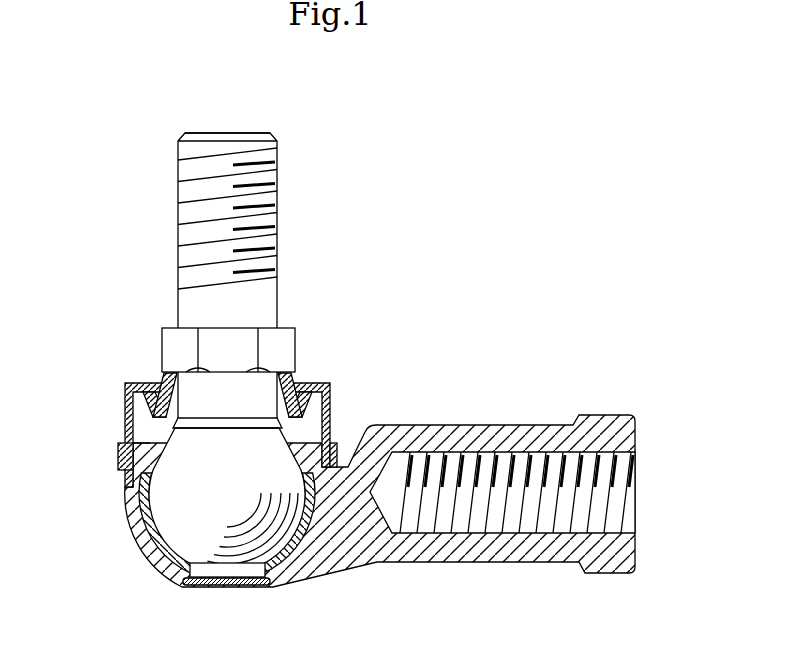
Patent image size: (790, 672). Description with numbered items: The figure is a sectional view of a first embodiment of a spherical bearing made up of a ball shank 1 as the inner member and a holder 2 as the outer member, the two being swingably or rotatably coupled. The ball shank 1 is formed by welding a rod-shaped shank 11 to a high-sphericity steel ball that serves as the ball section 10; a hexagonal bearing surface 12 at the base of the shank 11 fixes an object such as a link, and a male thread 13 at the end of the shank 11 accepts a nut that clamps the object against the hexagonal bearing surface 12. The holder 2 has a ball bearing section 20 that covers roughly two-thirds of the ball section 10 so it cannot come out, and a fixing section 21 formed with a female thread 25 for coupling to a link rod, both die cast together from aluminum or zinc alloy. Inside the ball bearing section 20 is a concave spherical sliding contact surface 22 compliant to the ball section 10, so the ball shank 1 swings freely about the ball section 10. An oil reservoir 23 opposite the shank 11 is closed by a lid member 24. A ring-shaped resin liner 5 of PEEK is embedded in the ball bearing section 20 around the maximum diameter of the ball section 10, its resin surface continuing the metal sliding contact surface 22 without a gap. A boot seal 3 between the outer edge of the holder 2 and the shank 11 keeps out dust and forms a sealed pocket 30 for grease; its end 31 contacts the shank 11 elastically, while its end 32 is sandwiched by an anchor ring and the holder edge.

The ball shank 1 is at (282, 300).
The holder 2 is at (407, 420).
The boot seal 3 is at (118, 399).
The resin liner 5 is at (118, 487).
The ball section 10 is at (290, 537).
The shank 11 is at (247, 131).
The hexagonal bearing surface 12 is at (173, 343).
The male thread 13 is at (188, 192).
The ball bearing section 20 is at (157, 563).
The fixing section 21 is at (503, 550).
The sliding contact surface 22 is at (172, 525).
The oil reservoir 23 is at (245, 587).
The lid member 24 is at (212, 587).
The female thread 25 is at (553, 522).
The sealed pocket 30 is at (137, 427).
The end of the boot seal closer to the ball shank 31 is at (292, 378).
The end of the boot seal closer to the holder 32 is at (117, 447).